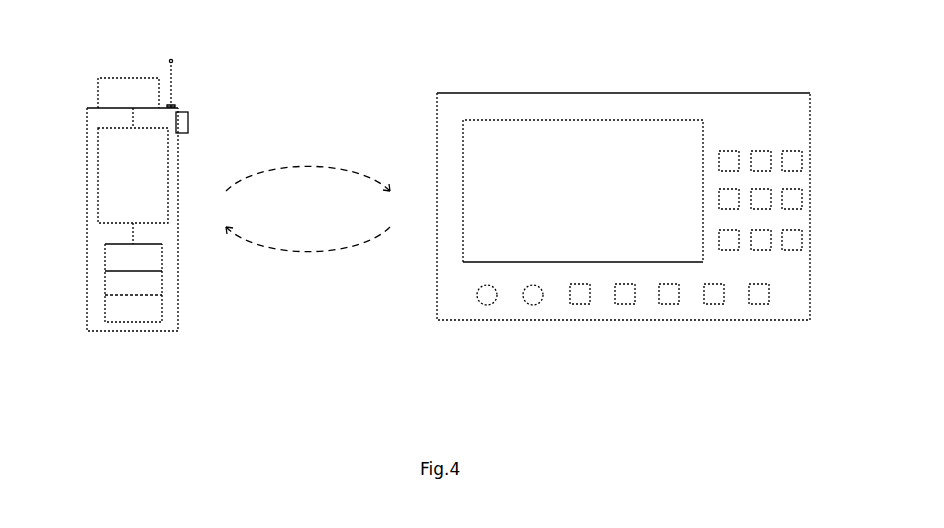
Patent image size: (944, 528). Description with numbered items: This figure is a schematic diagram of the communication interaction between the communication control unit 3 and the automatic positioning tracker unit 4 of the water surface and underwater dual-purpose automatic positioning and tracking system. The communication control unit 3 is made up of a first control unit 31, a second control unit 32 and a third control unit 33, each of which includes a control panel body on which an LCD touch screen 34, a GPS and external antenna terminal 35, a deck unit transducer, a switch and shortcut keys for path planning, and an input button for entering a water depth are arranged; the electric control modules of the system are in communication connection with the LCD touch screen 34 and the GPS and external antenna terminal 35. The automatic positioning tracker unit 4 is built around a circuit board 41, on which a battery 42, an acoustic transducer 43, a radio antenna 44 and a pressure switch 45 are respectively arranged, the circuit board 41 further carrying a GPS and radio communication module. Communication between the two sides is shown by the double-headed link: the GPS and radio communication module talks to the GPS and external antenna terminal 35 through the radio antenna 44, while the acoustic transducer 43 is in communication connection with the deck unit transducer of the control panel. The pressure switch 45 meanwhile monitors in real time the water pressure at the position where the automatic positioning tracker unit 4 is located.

The communication control unit 3 is at (812, 133).
The first control unit 31 is at (557, 138).
The second control unit 32 is at (533, 297).
The third control unit 33 is at (487, 297).
The LCD touch screen 34 is at (763, 295).
The GPS and external antenna terminal 35 is at (792, 199).
The automatic positioning tracker unit 4 is at (89, 221).
The circuit board 41 is at (102, 152).
The battery 42 is at (112, 283).
The acoustic transducer 43 is at (120, 80).
The radio antenna 44 is at (172, 68).
The pressure switch 45 is at (189, 125).